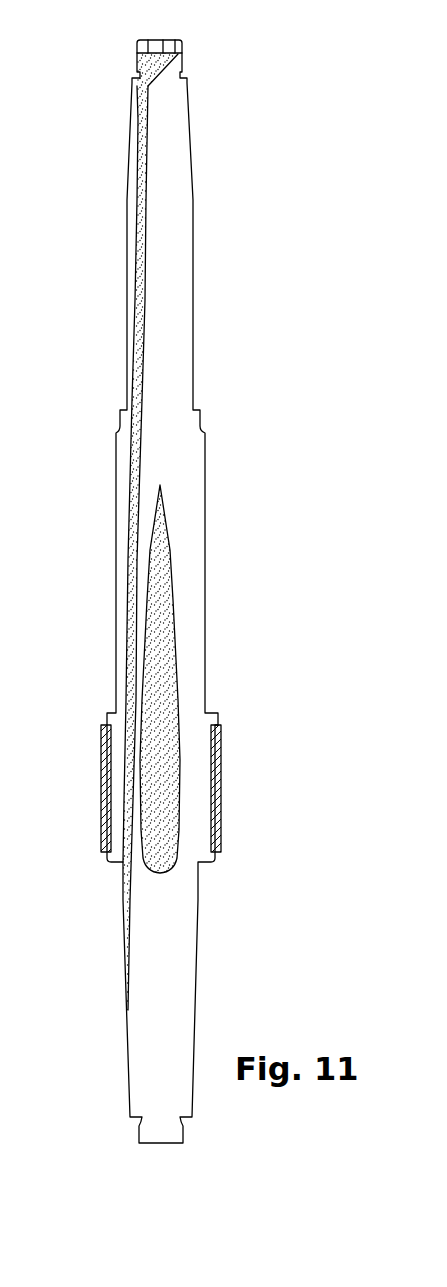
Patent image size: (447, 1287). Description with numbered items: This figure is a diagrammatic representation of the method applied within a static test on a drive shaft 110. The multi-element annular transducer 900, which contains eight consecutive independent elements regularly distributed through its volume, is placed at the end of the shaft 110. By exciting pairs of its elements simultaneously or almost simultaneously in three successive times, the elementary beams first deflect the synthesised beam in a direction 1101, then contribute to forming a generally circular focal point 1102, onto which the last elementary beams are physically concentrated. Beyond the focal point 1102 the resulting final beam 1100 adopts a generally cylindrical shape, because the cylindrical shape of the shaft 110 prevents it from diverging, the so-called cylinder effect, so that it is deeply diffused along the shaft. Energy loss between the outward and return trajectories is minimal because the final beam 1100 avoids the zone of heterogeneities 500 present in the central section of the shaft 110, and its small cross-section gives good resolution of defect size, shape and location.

The drive shaft 110 is at (205, 283).
The multi-element annular transducer 900 is at (171, 38).
The final beam 1100 is at (137, 278).
The deflection direction 1101 is at (156, 78).
The focal point 1102 is at (150, 78).
The zone of heterogeneities 500 is at (175, 550).